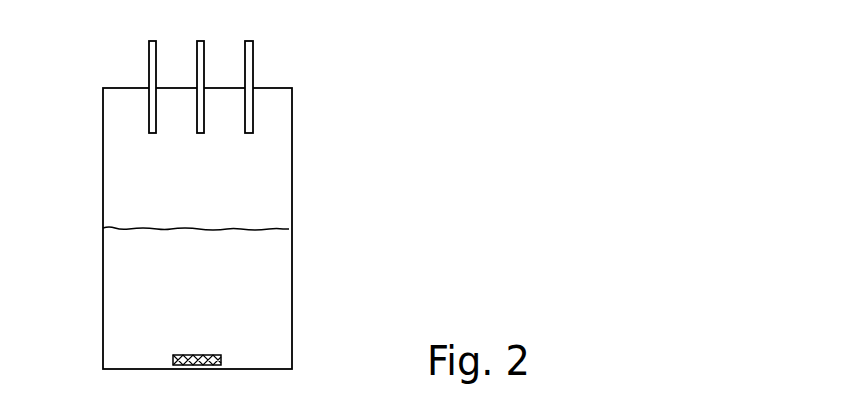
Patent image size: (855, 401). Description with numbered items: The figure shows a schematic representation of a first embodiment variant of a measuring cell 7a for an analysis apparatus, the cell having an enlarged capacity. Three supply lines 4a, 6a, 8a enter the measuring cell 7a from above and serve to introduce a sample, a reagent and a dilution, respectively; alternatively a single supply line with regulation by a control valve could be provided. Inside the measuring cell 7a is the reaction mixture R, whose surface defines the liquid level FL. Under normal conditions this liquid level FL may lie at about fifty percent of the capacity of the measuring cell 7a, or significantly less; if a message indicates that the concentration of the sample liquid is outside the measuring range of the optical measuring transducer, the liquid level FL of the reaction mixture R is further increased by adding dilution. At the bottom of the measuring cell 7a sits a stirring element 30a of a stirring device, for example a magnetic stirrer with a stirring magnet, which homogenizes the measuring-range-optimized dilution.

The supply line for a sample 4a is at (149, 60).
The supply line for a reagent 6a is at (197, 60).
The supply line for a dilution 8a is at (245, 60).
The measuring cell 7a is at (293, 183).
The liquid level Fl is at (272, 228).
The reaction mixture R is at (130, 266).
The stirring element 30a is at (221, 359).